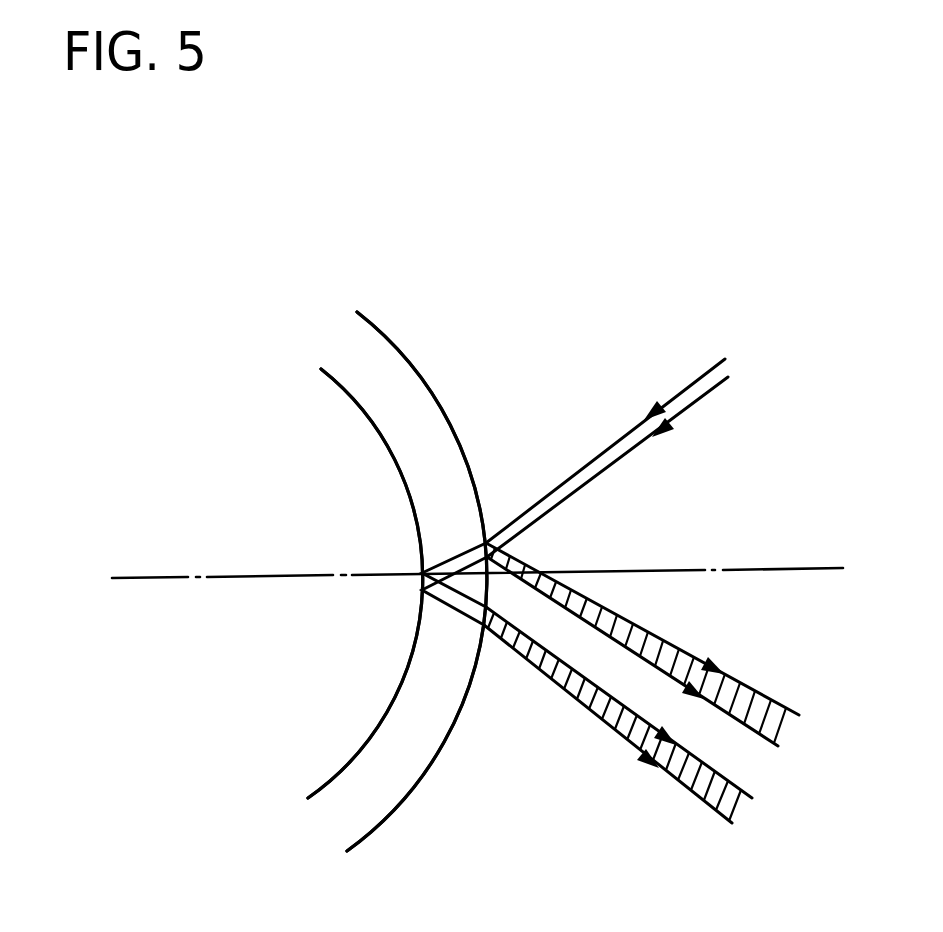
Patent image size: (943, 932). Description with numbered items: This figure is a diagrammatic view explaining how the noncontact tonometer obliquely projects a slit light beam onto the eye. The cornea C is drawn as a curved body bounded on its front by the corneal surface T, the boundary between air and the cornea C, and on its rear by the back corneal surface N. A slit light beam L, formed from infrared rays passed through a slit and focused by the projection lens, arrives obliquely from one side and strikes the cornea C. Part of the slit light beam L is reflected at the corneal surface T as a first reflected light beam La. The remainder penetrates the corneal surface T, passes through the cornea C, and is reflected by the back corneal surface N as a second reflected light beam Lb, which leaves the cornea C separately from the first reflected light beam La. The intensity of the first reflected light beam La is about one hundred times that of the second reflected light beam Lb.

The cornea C is at (490, 286).
The corneal surface T is at (430, 388).
The back corneal surface N is at (368, 422).
The slit light beam L is at (698, 402).
The first reflected light beam La is at (755, 687).
The second reflected light beam Lb is at (683, 785).